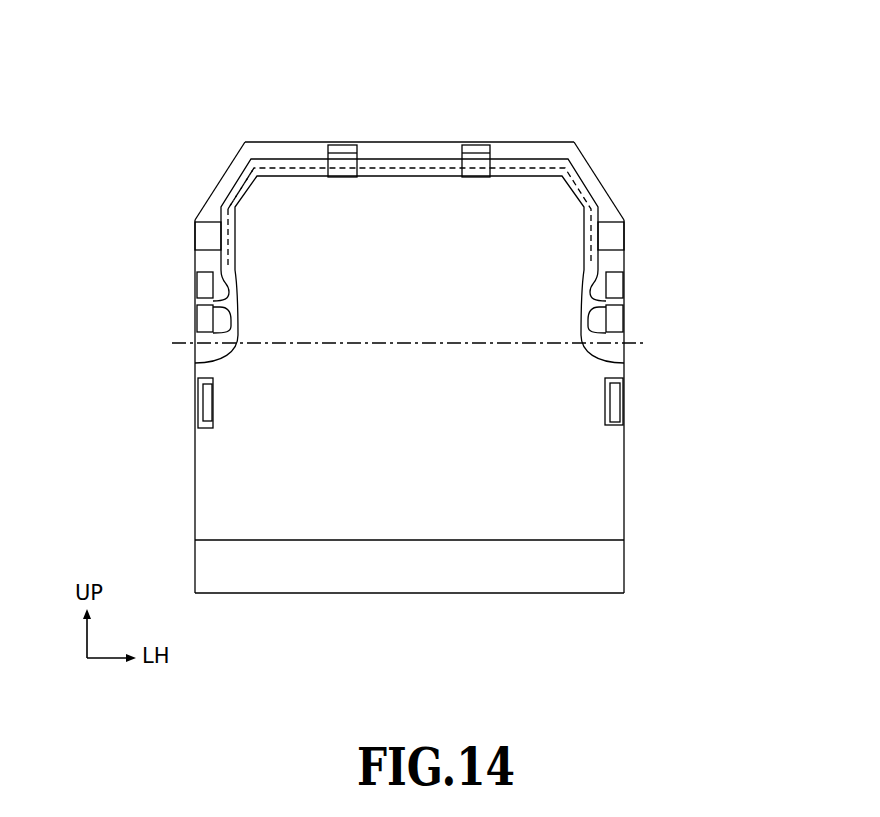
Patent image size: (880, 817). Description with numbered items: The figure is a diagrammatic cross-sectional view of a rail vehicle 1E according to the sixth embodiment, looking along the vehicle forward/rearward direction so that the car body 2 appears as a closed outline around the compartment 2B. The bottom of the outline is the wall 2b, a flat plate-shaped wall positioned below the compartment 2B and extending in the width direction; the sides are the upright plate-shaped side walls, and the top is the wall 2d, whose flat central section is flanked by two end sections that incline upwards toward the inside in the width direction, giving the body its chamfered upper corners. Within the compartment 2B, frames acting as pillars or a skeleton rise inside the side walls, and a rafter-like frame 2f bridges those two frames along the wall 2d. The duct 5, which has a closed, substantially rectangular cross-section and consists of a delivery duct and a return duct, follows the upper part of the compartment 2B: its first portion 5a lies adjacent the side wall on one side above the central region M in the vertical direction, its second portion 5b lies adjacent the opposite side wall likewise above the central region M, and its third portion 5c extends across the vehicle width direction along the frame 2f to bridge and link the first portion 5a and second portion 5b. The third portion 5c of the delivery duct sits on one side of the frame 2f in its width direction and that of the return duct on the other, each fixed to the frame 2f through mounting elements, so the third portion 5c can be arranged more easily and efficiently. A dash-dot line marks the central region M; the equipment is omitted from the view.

The rail vehicle 1E is at (566, 68).
The car body 2 is at (574, 138).
The compartment 2B is at (248, 198).
The wall 2b is at (467, 541).
The wall 2d is at (276, 142).
The frame 2f is at (530, 142).
The duct 5 is at (410, 233).
The first portion 5a is at (630, 283).
The second portion 5b is at (190, 285).
The third portion 5c is at (387, 160).
The central region M is at (387, 346).